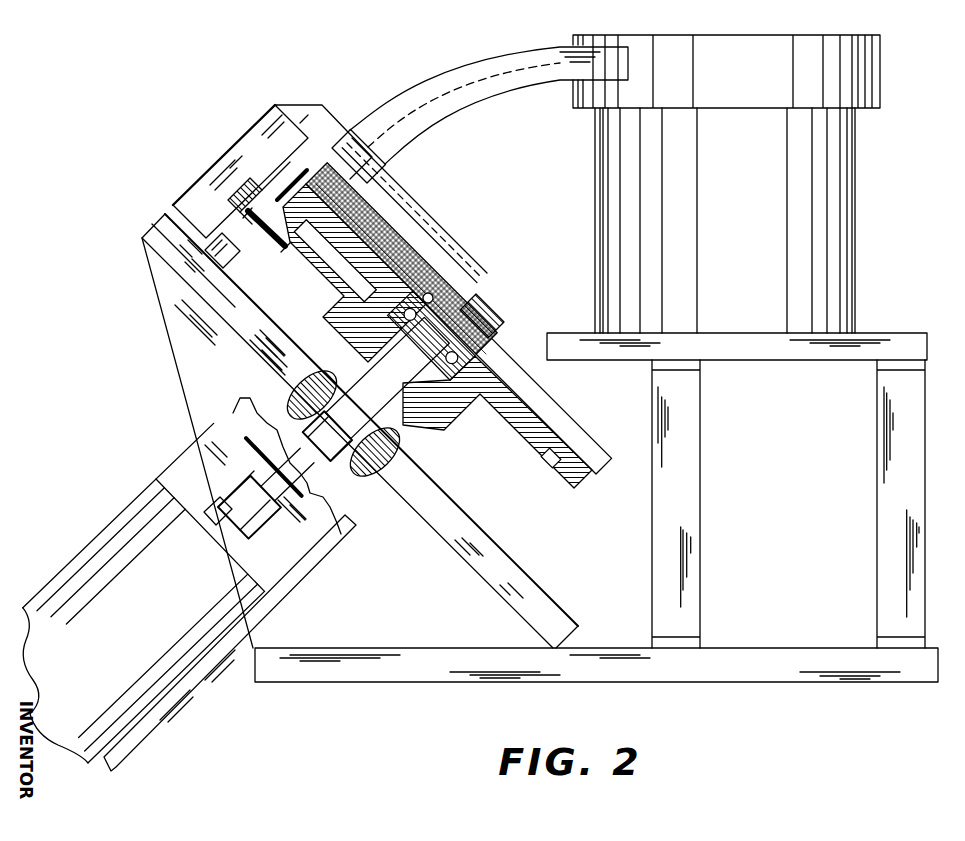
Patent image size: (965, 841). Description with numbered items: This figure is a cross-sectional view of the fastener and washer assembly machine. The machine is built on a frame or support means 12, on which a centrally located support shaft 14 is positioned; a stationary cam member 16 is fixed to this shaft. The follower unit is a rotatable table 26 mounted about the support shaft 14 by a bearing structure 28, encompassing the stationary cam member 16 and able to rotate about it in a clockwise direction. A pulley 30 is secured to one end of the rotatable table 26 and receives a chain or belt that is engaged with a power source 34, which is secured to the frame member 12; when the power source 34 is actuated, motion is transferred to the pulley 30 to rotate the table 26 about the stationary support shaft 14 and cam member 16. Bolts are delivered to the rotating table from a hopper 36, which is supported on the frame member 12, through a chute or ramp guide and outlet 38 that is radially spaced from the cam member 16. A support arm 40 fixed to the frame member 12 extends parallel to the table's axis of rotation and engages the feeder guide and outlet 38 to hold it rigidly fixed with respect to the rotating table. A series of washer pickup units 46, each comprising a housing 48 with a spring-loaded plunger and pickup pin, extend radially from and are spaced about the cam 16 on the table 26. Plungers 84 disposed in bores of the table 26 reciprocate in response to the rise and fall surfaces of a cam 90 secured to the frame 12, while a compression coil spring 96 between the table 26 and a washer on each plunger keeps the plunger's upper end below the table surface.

The frame or support means 12 is at (150, 236).
The support shaft 14 is at (364, 401).
The stationary cam member 16 is at (486, 337).
The rotatable table 26 is at (507, 417).
The bearing structure 28 is at (471, 402).
The pulley 30 is at (450, 448).
The power source 34 is at (233, 417).
The hopper 36 is at (726, 184).
The chute or ramp guide and outlet 38 is at (480, 92).
The support arm 40 is at (246, 140).
The washer pickup units 46 is at (399, 227).
The housing 48 is at (410, 247).
The plungers 84 is at (252, 206).
The cam 90 is at (241, 257).
The compression coil spring 96 is at (283, 228).